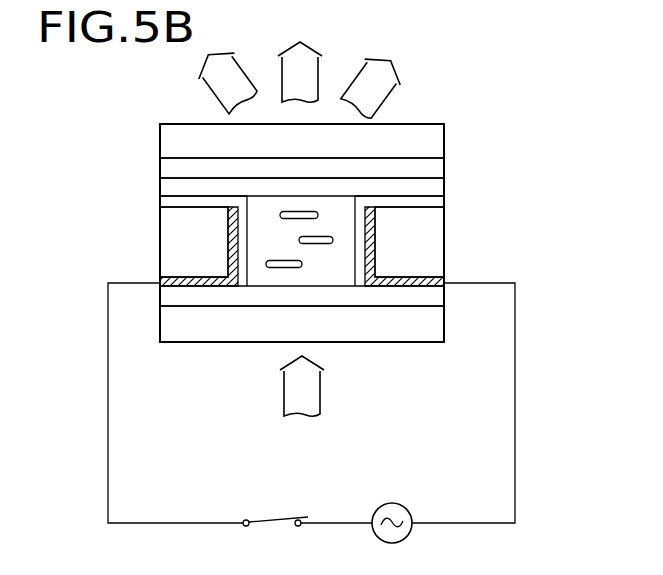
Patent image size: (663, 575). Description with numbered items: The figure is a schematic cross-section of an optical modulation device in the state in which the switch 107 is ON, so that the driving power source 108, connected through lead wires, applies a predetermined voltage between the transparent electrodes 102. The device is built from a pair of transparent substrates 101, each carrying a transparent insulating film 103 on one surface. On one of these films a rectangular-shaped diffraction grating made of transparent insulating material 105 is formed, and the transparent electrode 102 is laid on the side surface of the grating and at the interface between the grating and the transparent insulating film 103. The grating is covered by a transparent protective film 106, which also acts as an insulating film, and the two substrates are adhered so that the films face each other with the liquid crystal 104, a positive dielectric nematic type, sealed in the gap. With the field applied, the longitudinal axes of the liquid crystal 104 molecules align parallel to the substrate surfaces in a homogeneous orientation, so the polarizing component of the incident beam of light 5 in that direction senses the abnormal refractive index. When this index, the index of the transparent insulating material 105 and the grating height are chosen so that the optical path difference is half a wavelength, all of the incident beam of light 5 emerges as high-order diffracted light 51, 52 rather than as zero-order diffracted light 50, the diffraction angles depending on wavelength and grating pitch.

The incident beam of light 5 is at (323, 392).
The zero-order diffracted light 50 is at (320, 72).
The high-order diffracted light 51 is at (235, 63).
The high-order diffracted light 52 is at (383, 88).
The transparent substrate 101 is at (438, 138).
The transparent electrode 102 is at (162, 277).
The transparent insulating film 103 is at (437, 168).
The liquid crystal 104 is at (433, 190).
The transparent insulating material 105 is at (167, 230).
The transparent protective film 106 is at (162, 203).
The switch 107 is at (277, 528).
The driving power source 108 is at (403, 528).